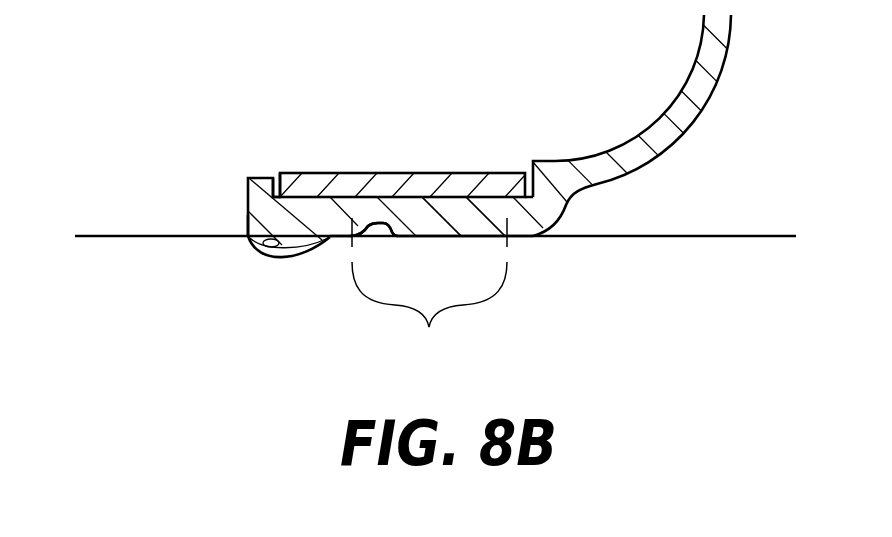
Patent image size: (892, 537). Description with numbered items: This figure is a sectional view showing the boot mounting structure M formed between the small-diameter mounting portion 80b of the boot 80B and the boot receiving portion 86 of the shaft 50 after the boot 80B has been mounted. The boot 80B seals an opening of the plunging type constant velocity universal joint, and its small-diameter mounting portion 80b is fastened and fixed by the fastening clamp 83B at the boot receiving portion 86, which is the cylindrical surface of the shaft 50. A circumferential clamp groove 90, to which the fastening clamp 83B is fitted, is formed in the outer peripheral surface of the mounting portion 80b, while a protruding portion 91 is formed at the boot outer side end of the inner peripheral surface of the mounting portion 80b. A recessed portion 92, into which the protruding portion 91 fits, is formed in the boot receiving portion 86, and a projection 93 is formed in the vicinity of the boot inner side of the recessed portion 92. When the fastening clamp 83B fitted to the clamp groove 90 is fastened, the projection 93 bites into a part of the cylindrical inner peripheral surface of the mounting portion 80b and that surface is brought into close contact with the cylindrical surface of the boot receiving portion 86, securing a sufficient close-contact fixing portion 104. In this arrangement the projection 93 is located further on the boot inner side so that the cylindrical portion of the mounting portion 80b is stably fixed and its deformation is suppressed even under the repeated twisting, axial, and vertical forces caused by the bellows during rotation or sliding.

The shaft 50 is at (718, 234).
The boot 80B is at (669, 102).
The small-diameter mounting portion 80b is at (310, 212).
The fastening clamp 83B is at (406, 170).
The boot receiving portion 86 is at (465, 235).
The circumferential clamp groove 90 is at (342, 207).
The protruding portion 91 is at (302, 243).
The recessed portion 92 is at (260, 243).
The projection 93 is at (378, 228).
The close-contact fixing portion 104 is at (429, 291).
The boot mounting structure M is at (232, 222).